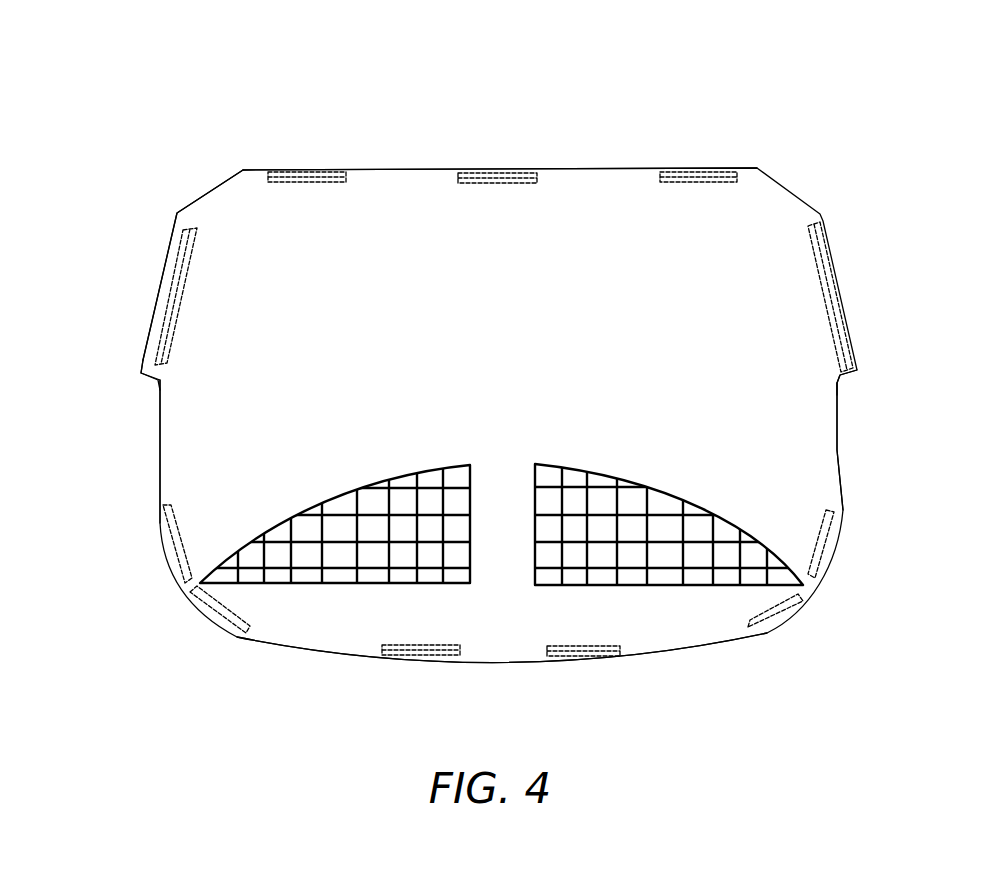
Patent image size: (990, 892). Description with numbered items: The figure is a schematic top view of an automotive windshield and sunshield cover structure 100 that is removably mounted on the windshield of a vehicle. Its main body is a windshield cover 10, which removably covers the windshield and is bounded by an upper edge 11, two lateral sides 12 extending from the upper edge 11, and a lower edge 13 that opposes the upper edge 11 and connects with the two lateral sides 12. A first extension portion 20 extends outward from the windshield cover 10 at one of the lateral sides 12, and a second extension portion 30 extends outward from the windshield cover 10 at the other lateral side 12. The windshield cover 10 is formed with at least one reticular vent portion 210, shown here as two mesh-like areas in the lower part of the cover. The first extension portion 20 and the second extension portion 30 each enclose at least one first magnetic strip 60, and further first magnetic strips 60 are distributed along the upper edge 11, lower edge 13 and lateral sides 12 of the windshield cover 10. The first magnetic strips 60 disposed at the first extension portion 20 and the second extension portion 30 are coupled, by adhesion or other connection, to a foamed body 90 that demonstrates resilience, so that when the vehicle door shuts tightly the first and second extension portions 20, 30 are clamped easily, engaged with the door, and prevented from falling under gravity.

The automotive windshield and sunshield cover structure 100 is at (958, 103).
The windshield cover 10 is at (238, 200).
The upper edge 11 is at (588, 168).
The lateral sides 12 is at (158, 446).
The lower edge 13 is at (495, 664).
The first extension portion 20 is at (140, 364).
The second extension portion 30 is at (858, 372).
The first magnetic strip 60 is at (475, 172).
The foamed body 90 is at (160, 292).
The reticular vent portion 210 is at (357, 493).